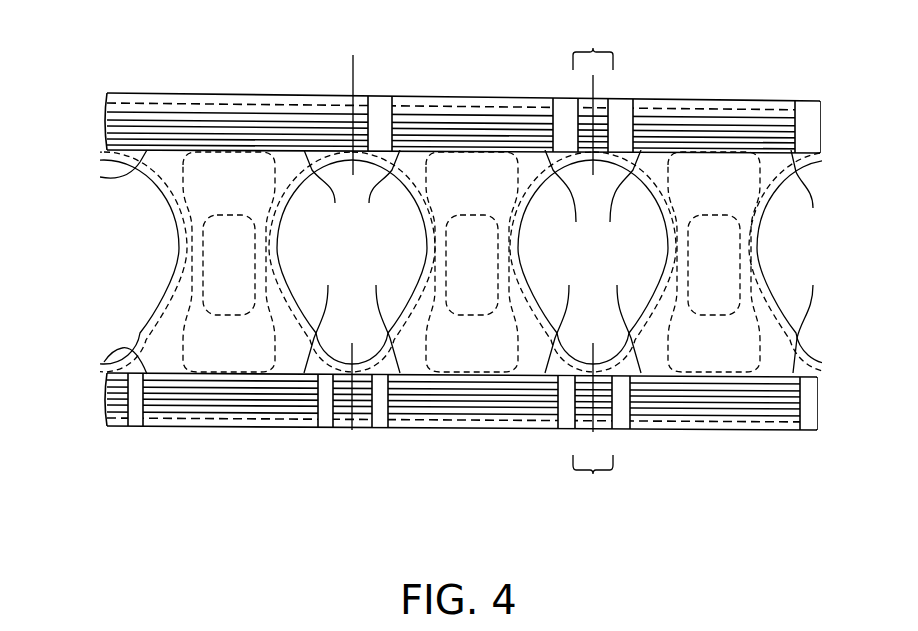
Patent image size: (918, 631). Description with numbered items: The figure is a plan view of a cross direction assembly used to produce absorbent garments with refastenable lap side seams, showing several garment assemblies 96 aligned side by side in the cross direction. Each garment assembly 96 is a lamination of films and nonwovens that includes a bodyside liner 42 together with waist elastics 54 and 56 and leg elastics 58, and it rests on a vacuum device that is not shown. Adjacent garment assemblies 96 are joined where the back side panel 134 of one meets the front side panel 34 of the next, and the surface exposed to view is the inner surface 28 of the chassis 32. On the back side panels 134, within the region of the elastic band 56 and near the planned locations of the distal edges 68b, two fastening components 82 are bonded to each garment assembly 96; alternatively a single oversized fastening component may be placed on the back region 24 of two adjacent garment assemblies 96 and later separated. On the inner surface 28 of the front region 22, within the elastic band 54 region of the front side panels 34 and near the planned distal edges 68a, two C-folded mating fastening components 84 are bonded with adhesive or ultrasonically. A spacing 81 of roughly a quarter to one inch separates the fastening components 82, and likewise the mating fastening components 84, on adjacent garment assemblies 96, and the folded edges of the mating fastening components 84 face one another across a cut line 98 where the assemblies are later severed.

The front region 22 is at (234, 112).
The back region 24 is at (202, 410).
The inner surface 28 is at (153, 322).
The chassis 32 is at (148, 246).
The front side panel 34 is at (55, 184).
The bodyside liner 42 is at (284, 285).
The waist elastic 54 is at (282, 128).
The waist elastic 56 is at (450, 431).
The leg elastics 58 is at (170, 210).
The distal edge 68a is at (585, 97).
The distal edge 68b is at (350, 432).
The spacing 81 is at (593, 262).
The fastening component 82 is at (135, 428).
The mating fastening component 84 is at (382, 103).
The garment assembly 96 is at (192, 78).
The cut line 98 is at (354, 46).
The back side panel 134 is at (80, 336).